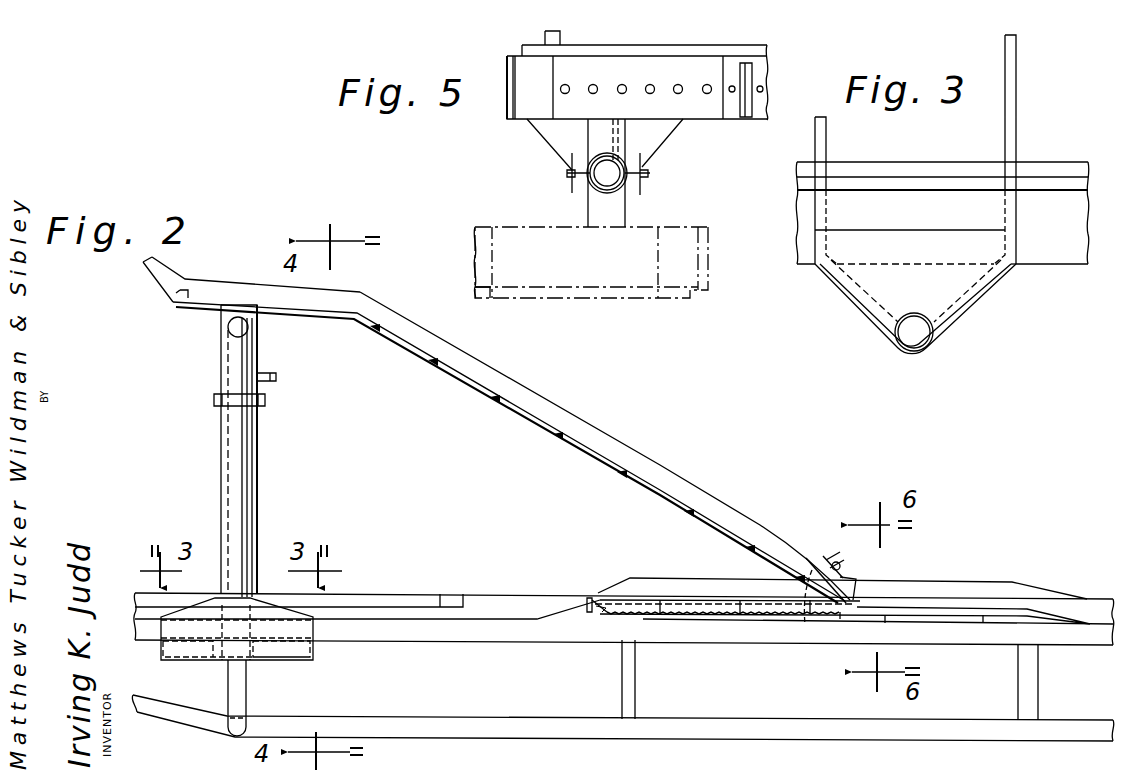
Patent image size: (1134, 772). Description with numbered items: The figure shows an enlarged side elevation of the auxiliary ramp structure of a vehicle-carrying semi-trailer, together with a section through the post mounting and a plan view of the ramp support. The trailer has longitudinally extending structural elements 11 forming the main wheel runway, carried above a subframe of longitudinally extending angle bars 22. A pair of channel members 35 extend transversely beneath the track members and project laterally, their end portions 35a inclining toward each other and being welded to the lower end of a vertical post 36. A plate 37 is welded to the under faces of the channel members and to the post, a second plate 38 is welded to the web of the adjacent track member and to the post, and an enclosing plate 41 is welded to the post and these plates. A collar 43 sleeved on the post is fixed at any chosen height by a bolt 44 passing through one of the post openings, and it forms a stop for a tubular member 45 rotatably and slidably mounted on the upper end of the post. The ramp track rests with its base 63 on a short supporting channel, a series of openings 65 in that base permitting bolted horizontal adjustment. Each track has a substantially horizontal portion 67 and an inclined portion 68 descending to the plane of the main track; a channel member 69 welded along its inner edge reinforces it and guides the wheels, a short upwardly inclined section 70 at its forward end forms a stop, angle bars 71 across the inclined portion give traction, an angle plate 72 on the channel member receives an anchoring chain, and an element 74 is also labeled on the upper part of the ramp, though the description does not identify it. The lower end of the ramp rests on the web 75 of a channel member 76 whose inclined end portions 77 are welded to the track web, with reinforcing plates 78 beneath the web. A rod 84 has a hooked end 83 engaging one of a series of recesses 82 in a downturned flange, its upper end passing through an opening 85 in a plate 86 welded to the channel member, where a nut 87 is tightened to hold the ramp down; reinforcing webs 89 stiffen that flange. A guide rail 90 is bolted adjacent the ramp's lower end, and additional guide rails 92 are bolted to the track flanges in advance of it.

In FIG. 2, the longitudinally extending structural element 11 is at (484, 614).
In FIG. 2, the longitudinally extending angle bar 22 is at (380, 718).
In FIG. 3, the channel member 35 is at (1008, 107).
In FIG. 3, the inclined end portion 35a is at (972, 298).
In FIG. 2, the post 36 is at (250, 490).
In FIG. 3, the post 36 is at (910, 314).
In FIG. 2, the plate 37 is at (246, 697).
In FIG. 3, the second plate 38 is at (870, 279).
In FIG. 3, the enclosing plate 41 is at (874, 326).
In FIG. 2, the collar 43 is at (232, 410).
In FIG. 2, the bolt 44 is at (268, 399).
In FIG. 2, the tubular member 45 is at (224, 356).
In FIG. 5, the base 63 is at (662, 66).
In FIG. 5, the openings 65 is at (707, 96).
In FIG. 2, the horizontal portion 67 is at (320, 316).
In FIG. 2, the inclined portion 68 is at (570, 447).
In FIG. 2, the channel member 69 is at (330, 297).
In FIG. 2, the short section 70 is at (150, 266).
In FIG. 2, the angle bar 71 is at (578, 430).
In FIG. 2, the angle plate 72 is at (190, 292).
In FIG. 2, the top plate 74 is at (240, 285).
In FIG. 2, the web 75 is at (892, 607).
In FIG. 2, the channel member 76 is at (610, 616).
In FIG. 2, the inclined end portion 77 is at (579, 614).
In FIG. 2, the reinforcing plate 78 is at (698, 618).
In FIG. 2, the recess 82 is at (586, 598).
In FIG. 2, the hooked end 83 is at (806, 620).
In FIG. 2, the member 84 is at (841, 562).
In FIG. 2, the opening 85 is at (856, 577).
In FIG. 2, the plate 86 is at (822, 560).
In FIG. 2, the nut 87 is at (834, 560).
In FIG. 2, the reinforcing web 89 is at (672, 604).
In FIG. 2, the guide rail 90 is at (935, 582).
In FIG. 2, the additional guide rail 92 is at (385, 604).
In FIG. 3, the additional guide rail 92 is at (1042, 186).